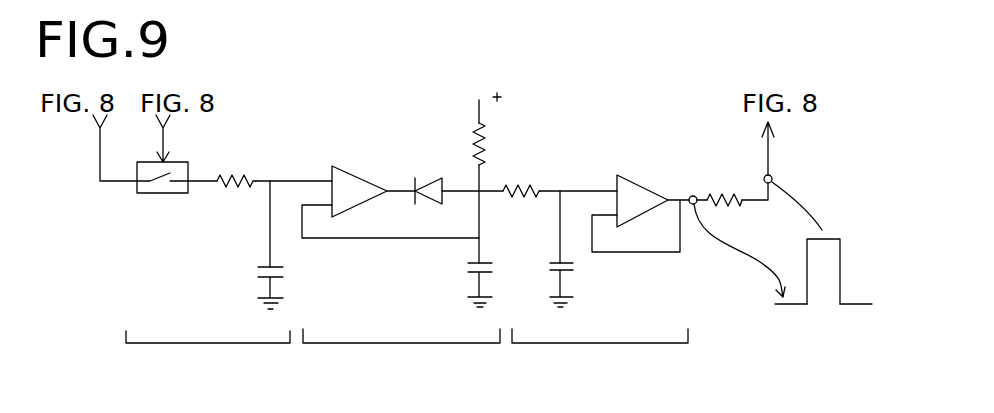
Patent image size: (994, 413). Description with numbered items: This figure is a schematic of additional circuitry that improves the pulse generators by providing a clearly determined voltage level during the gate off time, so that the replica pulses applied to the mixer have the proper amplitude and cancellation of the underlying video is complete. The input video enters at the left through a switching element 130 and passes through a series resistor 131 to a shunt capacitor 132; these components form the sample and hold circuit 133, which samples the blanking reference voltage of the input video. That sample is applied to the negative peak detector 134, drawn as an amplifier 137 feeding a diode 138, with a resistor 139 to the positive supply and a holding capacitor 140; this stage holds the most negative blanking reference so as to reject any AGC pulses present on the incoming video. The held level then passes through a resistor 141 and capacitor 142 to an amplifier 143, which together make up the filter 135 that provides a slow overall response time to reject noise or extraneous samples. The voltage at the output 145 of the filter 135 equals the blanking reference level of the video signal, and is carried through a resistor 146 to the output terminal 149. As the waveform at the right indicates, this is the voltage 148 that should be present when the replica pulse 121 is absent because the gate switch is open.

The replica pulse 121 is at (833, 233).
The switch 130 is at (162, 195).
The resistor 131 is at (237, 161).
The capacitor 132 is at (249, 285).
The sample and hold circuit 133 is at (215, 343).
The negative peak detector 134 is at (417, 343).
The filter 135 is at (608, 343).
The amplifier 137 is at (359, 178).
The diode 138 is at (422, 175).
The resistor 139 is at (499, 142).
The capacitor 140 is at (457, 283).
The resistor 141 is at (516, 178).
The capacitor 142 is at (579, 285).
The comparator 143 is at (630, 173).
The output of the filter 145 is at (673, 191).
The resistor 146 is at (730, 214).
The voltage 148 is at (797, 310).
The output terminal 149 is at (777, 155).